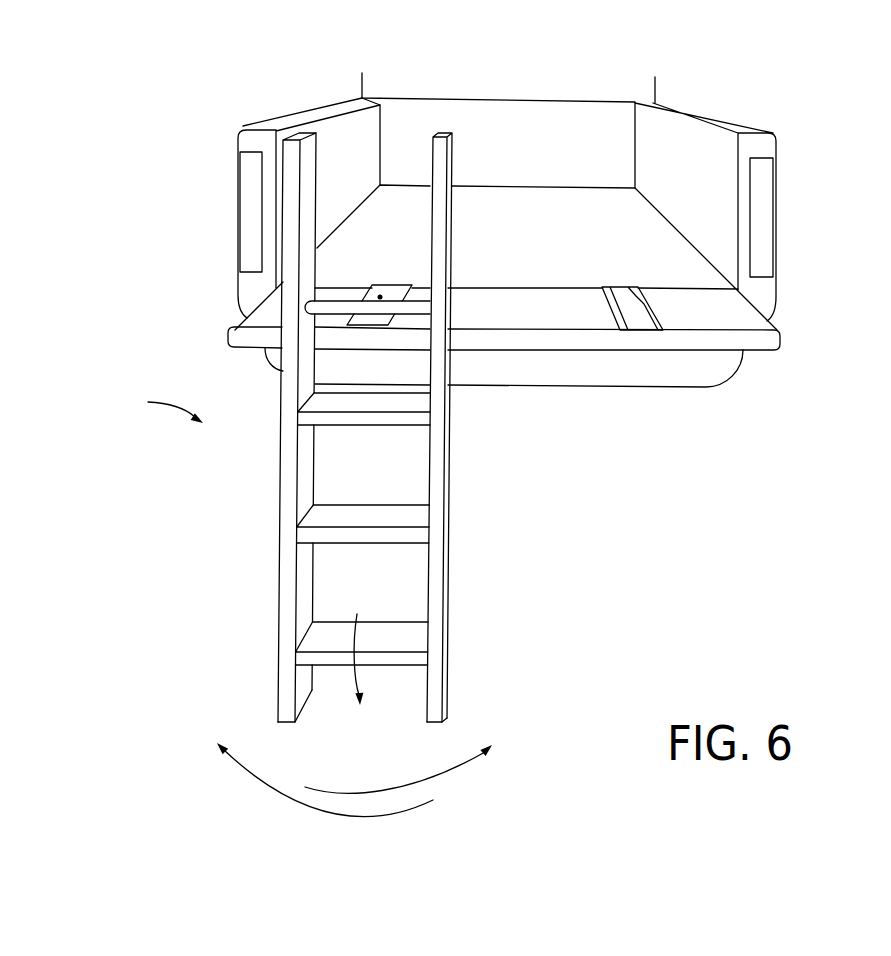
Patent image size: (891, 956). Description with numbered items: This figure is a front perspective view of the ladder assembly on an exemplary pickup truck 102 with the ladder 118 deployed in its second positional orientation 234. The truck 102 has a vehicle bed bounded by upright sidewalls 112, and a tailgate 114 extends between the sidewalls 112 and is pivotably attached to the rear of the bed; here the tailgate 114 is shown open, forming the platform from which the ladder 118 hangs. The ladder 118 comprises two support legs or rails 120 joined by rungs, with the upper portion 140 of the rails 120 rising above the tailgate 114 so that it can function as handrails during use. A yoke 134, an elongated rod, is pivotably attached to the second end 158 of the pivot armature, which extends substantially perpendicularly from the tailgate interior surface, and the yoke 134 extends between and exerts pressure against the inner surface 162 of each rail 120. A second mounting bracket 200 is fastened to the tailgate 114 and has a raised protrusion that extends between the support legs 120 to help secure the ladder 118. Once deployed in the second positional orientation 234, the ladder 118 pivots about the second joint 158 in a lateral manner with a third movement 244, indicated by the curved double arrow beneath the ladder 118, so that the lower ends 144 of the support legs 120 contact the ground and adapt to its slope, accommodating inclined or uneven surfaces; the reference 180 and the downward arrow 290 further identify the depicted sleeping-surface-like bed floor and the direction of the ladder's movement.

The pickup truck 102 is at (527, 234).
The upright sidewalls 112 is at (693, 152).
The tailgate 114 is at (733, 322).
The ladder 118 is at (303, 448).
The support leg or rail 120 is at (449, 472).
The yoke 134 is at (340, 300).
The upper portion of the rails 140 is at (367, 427).
The lower ends of the support legs 144 is at (288, 683).
The second end of the pivot armature / second joint 158 is at (378, 295).
The inner surface of each rail 162 is at (400, 290).
The sleeping surface / mattress support 180 is at (522, 226).
The second mounting bracket 200 is at (616, 296).
The second positional orientation 234 is at (151, 406).
The third movement 244 is at (362, 813).
The direction of movement 290 is at (360, 647).